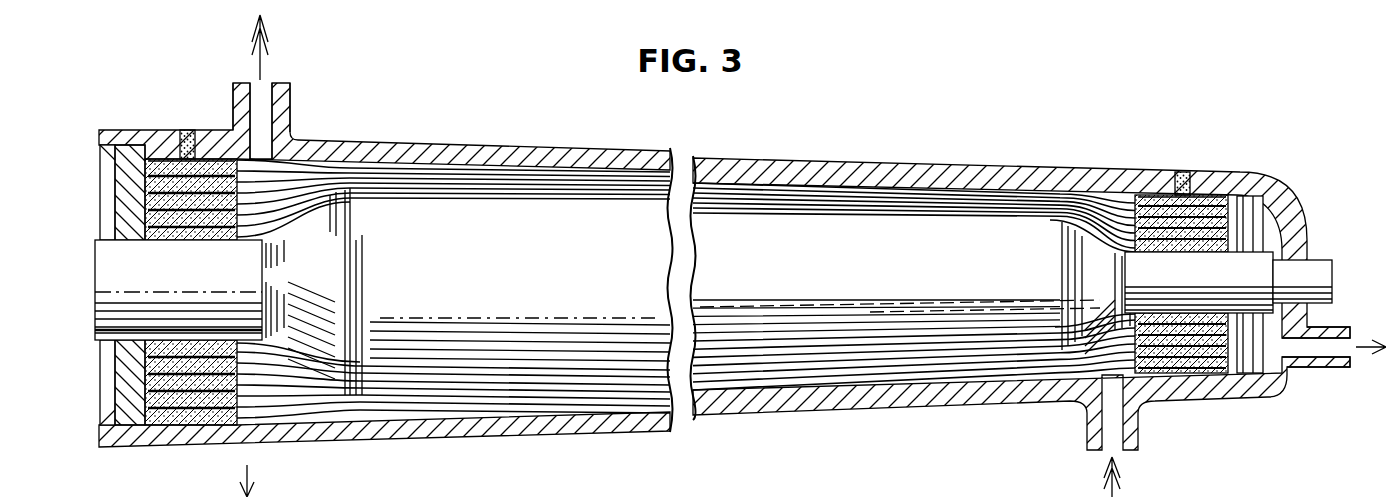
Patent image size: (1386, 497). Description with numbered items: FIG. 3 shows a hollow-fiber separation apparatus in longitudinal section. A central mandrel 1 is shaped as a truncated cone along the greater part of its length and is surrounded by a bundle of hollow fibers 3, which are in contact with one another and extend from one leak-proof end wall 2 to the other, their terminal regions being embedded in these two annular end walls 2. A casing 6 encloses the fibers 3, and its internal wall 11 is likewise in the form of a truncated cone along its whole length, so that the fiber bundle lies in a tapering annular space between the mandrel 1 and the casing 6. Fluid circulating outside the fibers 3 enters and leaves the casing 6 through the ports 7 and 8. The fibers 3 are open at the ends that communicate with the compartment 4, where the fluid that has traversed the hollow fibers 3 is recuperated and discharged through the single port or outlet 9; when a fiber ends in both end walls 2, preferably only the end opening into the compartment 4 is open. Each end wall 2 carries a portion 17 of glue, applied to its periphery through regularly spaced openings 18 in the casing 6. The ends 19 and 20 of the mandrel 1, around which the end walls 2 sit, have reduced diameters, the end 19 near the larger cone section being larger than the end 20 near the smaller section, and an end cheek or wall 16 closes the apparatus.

The mandrel 1 is at (520, 285).
The leak-proof end walls 2 is at (198, 430).
The hollow fibers 3 is at (875, 200).
The compartment 4 is at (1021, 318).
The casing 6 is at (573, 153).
The port 7 is at (262, 105).
The port 8 is at (1107, 425).
The outlet 9 is at (1322, 368).
The inner wall of the casing 11 is at (512, 158).
The end cheek 16 is at (125, 187).
The portion of glue 17 is at (170, 158).
The openings 18 is at (184, 132).
The end of the mandrel 19 is at (112, 273).
The end of the mandrel 20 is at (1257, 257).